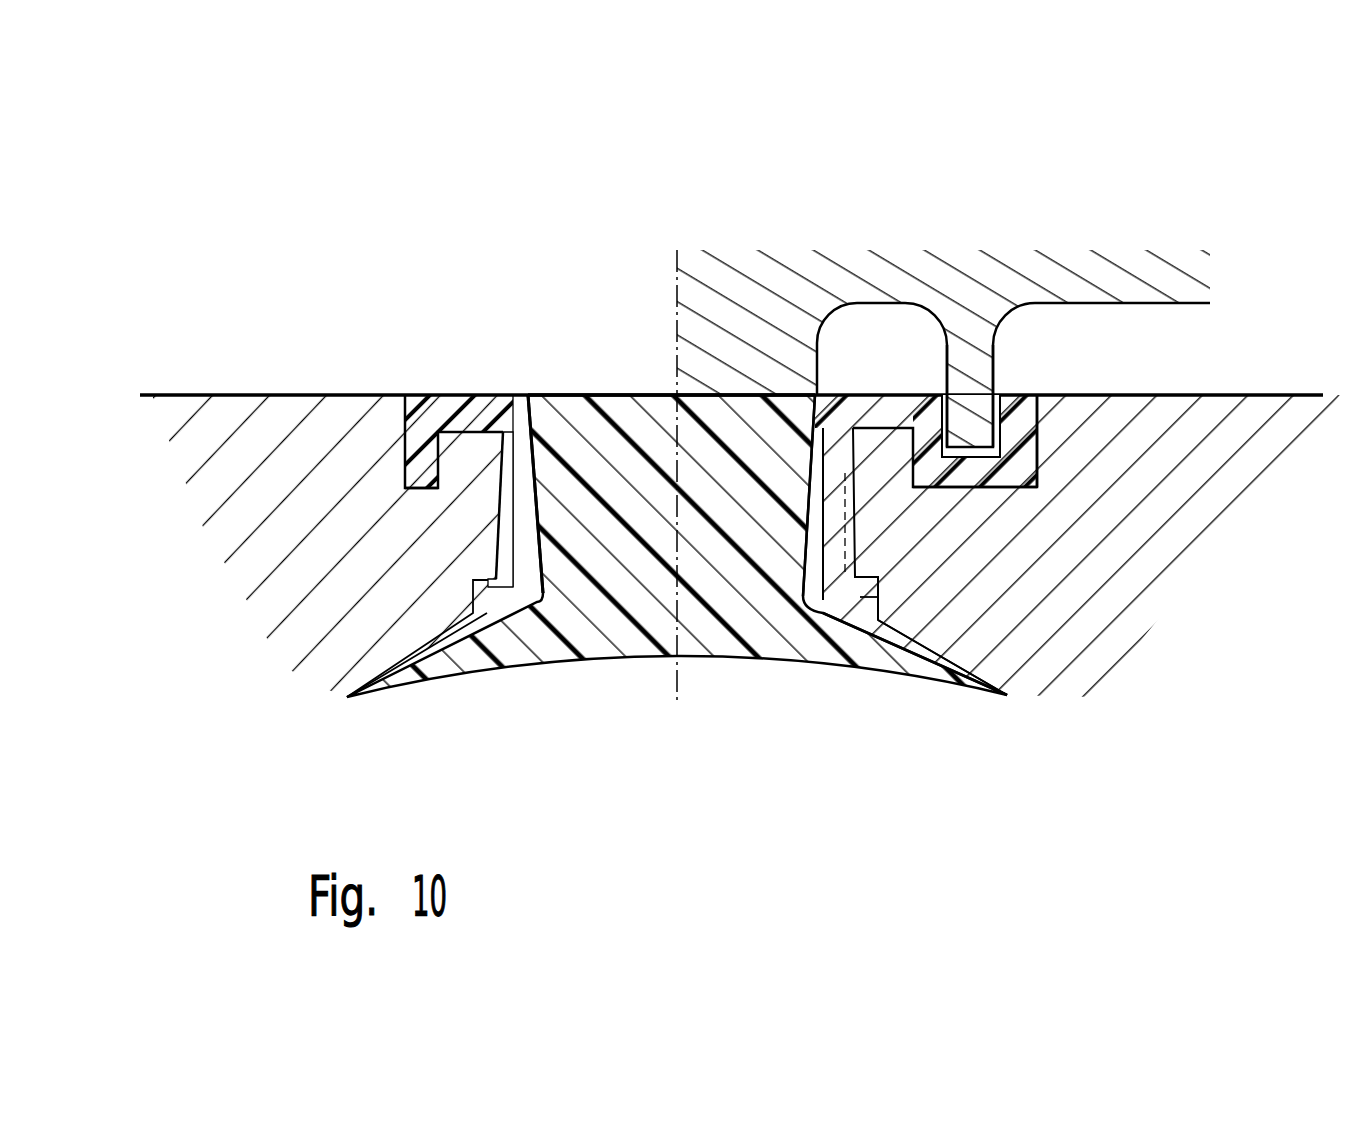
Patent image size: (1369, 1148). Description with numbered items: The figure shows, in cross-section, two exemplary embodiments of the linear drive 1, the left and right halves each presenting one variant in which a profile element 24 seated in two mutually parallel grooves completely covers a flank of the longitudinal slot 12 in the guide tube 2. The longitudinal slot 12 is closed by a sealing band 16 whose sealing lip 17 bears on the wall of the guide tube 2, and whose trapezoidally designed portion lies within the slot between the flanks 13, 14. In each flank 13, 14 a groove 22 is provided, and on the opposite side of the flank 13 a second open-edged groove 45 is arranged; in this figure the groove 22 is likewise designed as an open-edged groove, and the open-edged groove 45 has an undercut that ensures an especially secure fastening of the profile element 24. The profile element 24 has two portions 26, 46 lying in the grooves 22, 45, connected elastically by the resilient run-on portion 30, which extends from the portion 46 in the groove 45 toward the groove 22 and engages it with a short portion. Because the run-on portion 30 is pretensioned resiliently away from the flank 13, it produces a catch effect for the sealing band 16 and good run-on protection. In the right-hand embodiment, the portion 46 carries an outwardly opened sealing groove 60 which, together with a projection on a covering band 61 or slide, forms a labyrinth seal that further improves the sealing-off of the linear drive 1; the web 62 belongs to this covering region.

The linear drive 1 is at (577, 223).
The guide tube 2 is at (232, 395).
The longitudinal slot 12 is at (525, 357).
The flank 13 is at (497, 532).
The flank 14 is at (857, 523).
The sealing band 16 is at (607, 437).
The sealing lip 17 is at (930, 678).
The groove 22 is at (472, 587).
The profile element 24 is at (443, 395).
The portion 26 is at (492, 615).
The run-on portion 30 is at (527, 507).
The open-edged groove 45 is at (423, 457).
The portion 46 is at (1022, 440).
The sealing groove 60 is at (1008, 387).
The covering band 61 is at (898, 293).
The web 62 is at (972, 405).